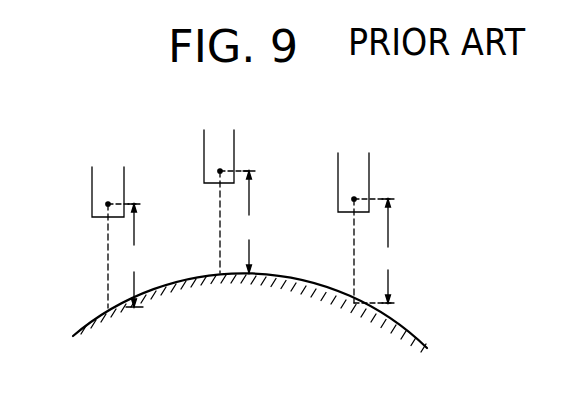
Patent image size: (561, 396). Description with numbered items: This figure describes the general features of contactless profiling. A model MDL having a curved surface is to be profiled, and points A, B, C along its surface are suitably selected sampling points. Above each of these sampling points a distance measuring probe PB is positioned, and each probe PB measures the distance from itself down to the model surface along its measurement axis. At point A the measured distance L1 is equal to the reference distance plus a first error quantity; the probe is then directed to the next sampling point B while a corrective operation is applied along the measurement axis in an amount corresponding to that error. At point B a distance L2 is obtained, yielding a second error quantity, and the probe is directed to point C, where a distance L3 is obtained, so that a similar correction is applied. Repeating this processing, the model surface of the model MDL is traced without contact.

The probe PB is at (92, 197).
The model MDL is at (410, 329).
The sampling point A is at (112, 273).
The sampling point B is at (219, 239).
The sampling point C is at (352, 268).
The measured distance L1 is at (126, 255).
The distance L2 is at (240, 222).
The distance L3 is at (374, 251).